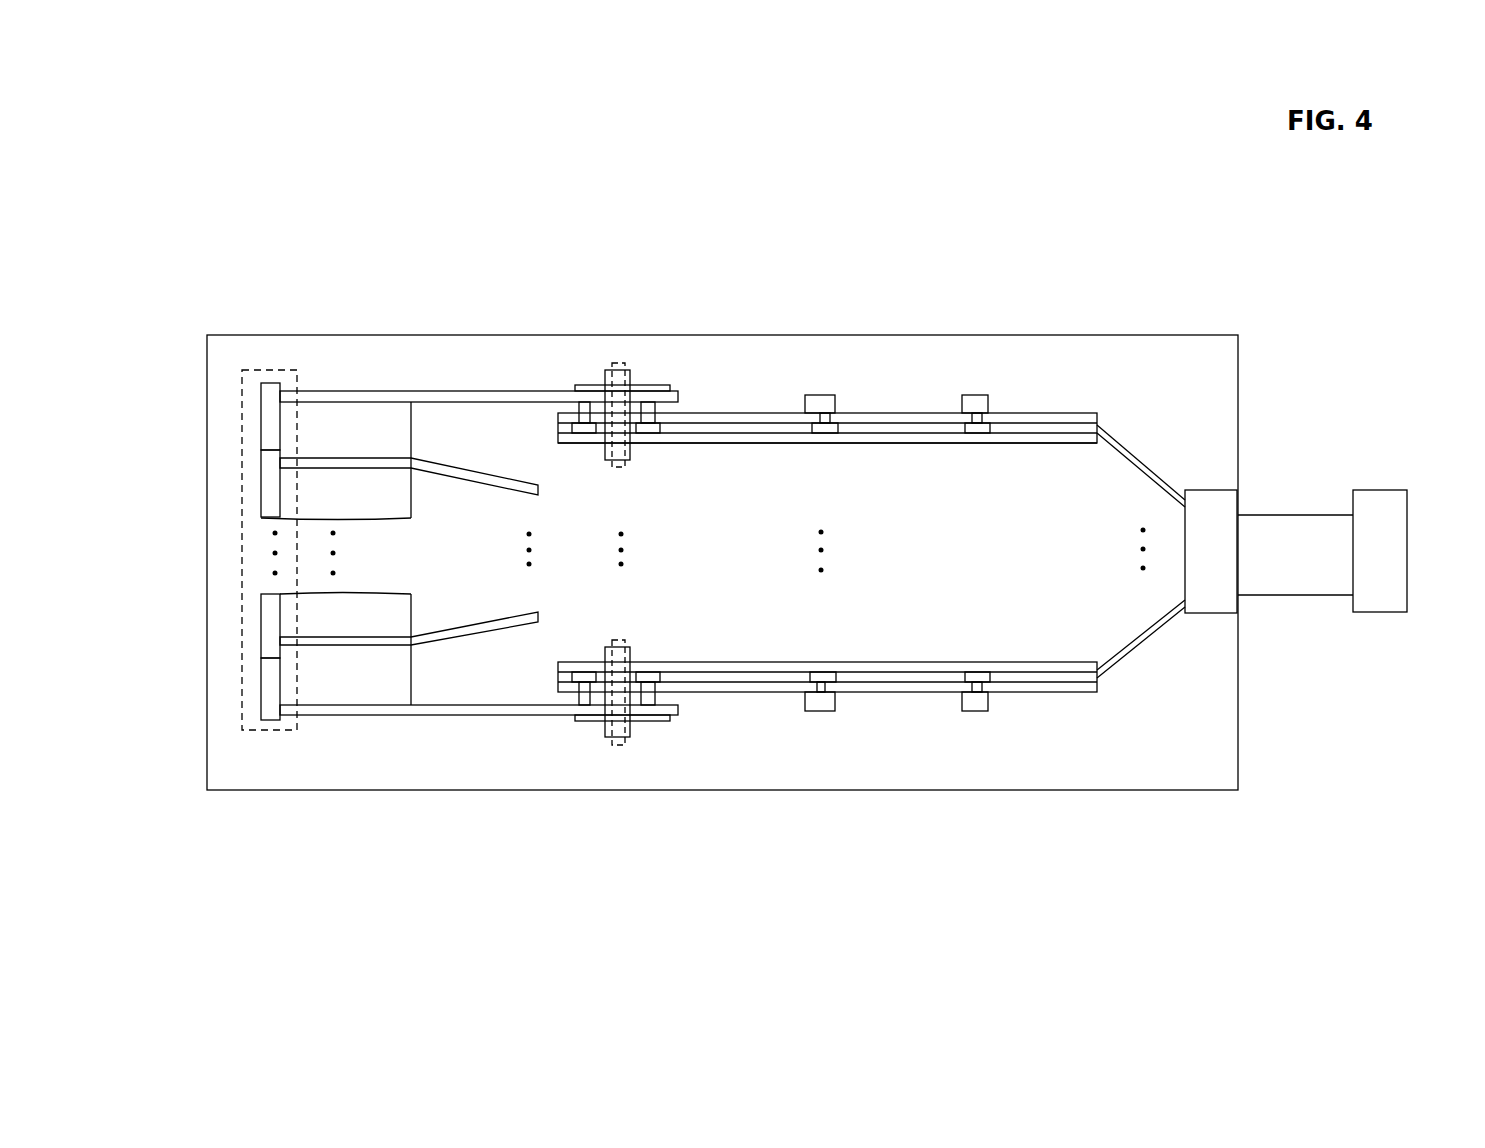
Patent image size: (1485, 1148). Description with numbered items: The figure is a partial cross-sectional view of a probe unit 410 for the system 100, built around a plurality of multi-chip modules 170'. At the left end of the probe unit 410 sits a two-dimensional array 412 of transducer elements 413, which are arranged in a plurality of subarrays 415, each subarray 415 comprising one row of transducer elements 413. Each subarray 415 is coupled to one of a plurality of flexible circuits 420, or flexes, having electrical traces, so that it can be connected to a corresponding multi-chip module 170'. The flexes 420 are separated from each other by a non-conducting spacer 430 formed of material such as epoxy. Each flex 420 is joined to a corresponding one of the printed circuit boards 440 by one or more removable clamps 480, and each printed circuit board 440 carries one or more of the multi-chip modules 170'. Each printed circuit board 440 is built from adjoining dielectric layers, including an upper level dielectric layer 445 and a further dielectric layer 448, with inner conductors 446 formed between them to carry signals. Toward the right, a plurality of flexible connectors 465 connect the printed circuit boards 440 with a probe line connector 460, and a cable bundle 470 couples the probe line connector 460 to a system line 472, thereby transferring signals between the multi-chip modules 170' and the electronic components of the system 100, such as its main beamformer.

The system 100 is at (196, 100).
The probe unit 410 is at (707, 790).
The two-dimensional array 412 is at (238, 390).
The transducer elements 413 is at (265, 387).
The subarrays 415 is at (261, 417).
The flexible circuits 420 is at (393, 392).
The non-conducting spacer 430 is at (313, 418).
The printed circuit boards 440 is at (849, 522).
The upper level dielectric layer 445 is at (1007, 413).
The inner conductors 446 is at (853, 417).
The dielectric layer 448 is at (1043, 440).
The multi-chip modules 170' is at (877, 528).
The removable clamps 480 is at (627, 368).
The probe line connector 460 is at (1218, 490).
The flexible connectors 465 is at (1140, 460).
The cable bundle 470 is at (1298, 596).
The system line 472 is at (1367, 490).